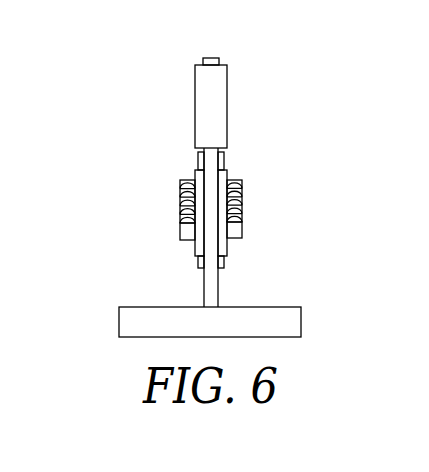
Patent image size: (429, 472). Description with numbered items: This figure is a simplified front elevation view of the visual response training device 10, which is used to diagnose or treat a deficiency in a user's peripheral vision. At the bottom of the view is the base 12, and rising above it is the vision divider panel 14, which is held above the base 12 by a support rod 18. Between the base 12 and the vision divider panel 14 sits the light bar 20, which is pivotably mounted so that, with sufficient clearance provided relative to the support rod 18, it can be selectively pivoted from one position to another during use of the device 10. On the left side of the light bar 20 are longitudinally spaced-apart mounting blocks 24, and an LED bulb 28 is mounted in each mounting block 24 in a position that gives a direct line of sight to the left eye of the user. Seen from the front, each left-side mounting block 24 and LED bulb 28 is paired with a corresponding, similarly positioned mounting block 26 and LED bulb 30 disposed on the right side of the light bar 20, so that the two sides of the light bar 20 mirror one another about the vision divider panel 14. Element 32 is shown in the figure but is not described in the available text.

The visual response training device 10 is at (290, 68).
The base 12 is at (137, 320).
The vision divider panel 14 is at (207, 103).
The support rod 18 is at (211, 60).
The light bar 20 is at (196, 243).
The mounting block 24 is at (187, 237).
The mounting block 26 is at (235, 233).
The LED bulb 28 is at (183, 218).
The LED bulb 30 is at (237, 220).
The bushing 32 is at (222, 162).